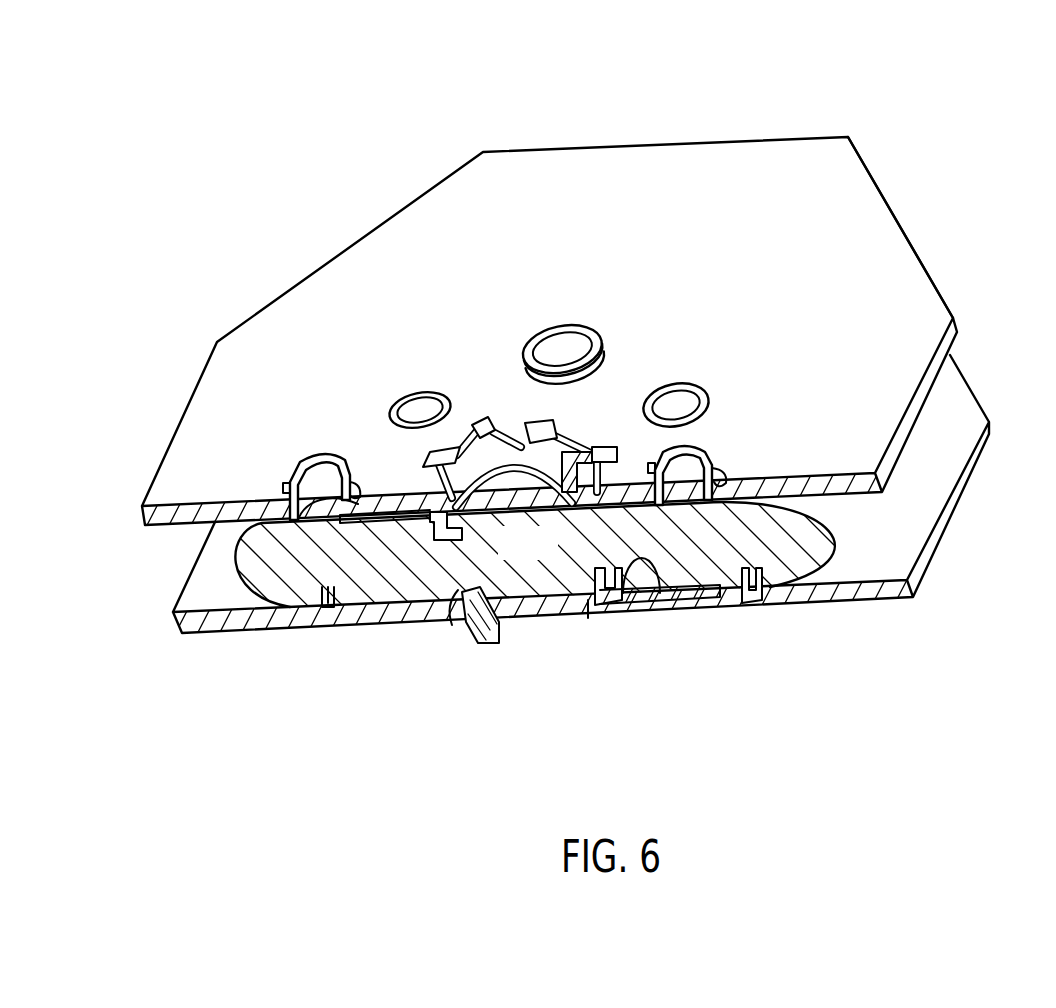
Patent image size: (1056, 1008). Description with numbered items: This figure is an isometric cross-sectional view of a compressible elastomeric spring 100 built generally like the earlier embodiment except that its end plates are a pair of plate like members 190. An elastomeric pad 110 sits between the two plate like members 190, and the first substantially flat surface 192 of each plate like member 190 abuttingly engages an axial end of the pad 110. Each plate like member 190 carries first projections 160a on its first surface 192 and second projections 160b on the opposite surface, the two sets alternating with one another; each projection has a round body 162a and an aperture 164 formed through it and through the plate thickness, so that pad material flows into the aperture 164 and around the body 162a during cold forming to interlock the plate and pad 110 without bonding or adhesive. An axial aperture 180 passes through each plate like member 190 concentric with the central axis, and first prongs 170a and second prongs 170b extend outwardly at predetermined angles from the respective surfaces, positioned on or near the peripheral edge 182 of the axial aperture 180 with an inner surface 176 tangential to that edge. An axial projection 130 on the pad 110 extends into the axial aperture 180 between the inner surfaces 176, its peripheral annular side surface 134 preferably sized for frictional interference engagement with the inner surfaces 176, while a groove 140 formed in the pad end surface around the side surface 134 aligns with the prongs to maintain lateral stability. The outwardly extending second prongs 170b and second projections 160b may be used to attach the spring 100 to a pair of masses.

The compressible elastomeric spring 100 is at (750, 108).
The pad 110 is at (520, 642).
The axial projection 130 is at (543, 495).
The peripheral annular side surface 134 is at (462, 636).
The groove 140 is at (440, 623).
The first projections 160a is at (409, 379).
The second projections 160b is at (590, 333).
The body 162a is at (416, 410).
The aperture 164 is at (690, 400).
The first prongs 170a is at (392, 545).
The second prongs 170b is at (478, 420).
The inner surface 176 is at (590, 605).
The axial aperture 180 is at (528, 544).
The peripheral edge 182 is at (506, 485).
The plate like member 190 is at (893, 245).
The first substantially flat surface 192 is at (900, 306).